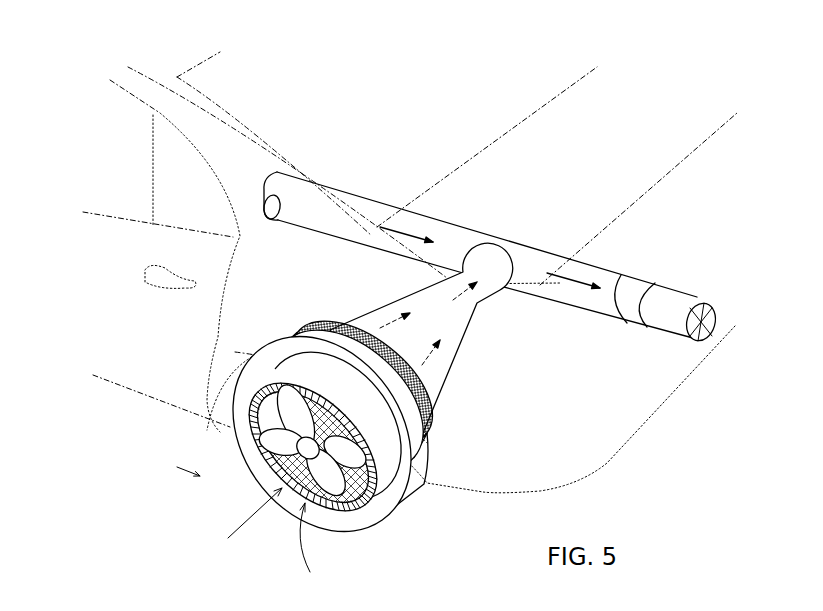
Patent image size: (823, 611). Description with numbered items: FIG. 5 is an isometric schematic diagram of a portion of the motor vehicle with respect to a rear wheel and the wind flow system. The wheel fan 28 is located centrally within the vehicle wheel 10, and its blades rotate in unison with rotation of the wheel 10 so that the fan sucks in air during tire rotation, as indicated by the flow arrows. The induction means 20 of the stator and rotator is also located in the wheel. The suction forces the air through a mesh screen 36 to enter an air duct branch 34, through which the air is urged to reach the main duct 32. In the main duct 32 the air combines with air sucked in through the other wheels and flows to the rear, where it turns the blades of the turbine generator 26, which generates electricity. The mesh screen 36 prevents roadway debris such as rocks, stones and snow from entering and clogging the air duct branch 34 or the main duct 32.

The vehicle wheel 10 is at (245, 389).
The induction means 20 is at (258, 426).
The turbine generator 26 is at (705, 296).
The wheel fan 28 is at (276, 456).
The main duct 32 is at (327, 238).
The air duct branch 34 is at (463, 274).
The mesh screen 36 is at (343, 340).